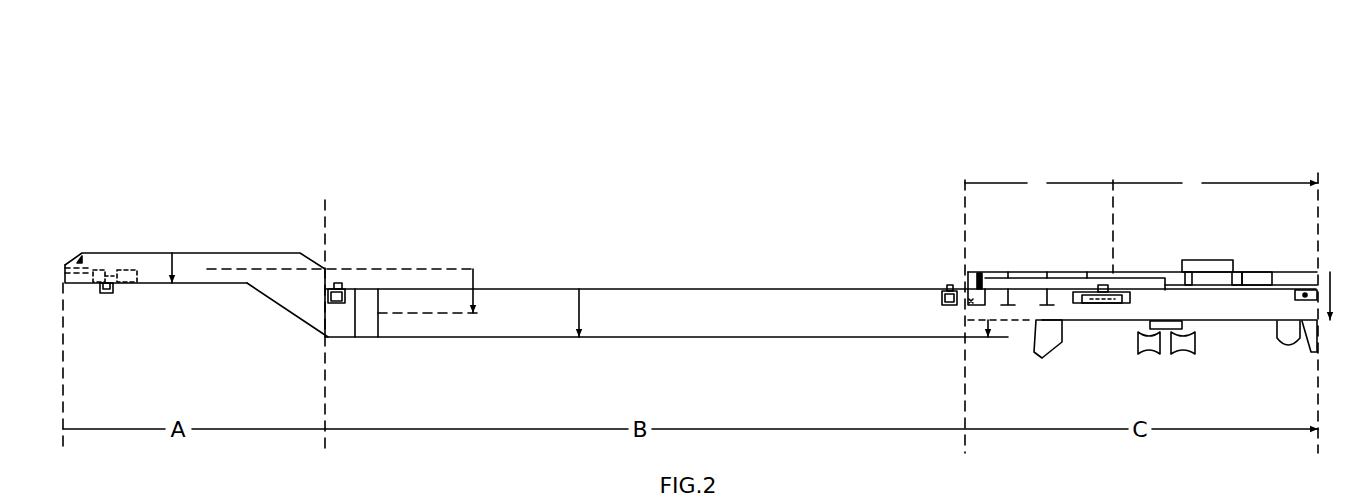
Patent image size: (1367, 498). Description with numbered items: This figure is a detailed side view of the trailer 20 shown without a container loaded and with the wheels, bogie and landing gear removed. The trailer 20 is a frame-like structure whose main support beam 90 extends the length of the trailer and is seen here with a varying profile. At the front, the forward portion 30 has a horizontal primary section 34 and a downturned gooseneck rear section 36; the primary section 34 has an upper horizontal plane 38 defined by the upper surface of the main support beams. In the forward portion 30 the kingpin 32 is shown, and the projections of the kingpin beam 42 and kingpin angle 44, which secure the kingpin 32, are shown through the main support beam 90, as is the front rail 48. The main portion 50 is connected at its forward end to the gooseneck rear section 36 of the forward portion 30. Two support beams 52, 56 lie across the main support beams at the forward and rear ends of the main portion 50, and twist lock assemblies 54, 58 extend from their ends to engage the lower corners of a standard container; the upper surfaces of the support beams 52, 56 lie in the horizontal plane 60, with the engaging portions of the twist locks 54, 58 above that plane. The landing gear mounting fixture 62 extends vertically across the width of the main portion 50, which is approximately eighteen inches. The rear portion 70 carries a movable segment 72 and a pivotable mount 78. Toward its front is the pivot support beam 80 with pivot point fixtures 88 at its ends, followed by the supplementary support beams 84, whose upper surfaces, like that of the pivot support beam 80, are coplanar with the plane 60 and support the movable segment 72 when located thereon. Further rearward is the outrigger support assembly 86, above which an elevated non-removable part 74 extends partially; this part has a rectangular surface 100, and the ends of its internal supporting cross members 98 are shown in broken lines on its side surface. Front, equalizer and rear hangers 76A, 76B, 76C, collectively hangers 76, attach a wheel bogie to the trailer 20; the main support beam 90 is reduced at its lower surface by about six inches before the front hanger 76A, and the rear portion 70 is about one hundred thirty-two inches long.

The trailer 20 is at (731, 92).
The forward portion 30 is at (272, 182).
The kingpin 32 is at (105, 294).
The primary section 34 is at (195, 317).
The gooseneck rear section 36 is at (268, 320).
The upper horizontal plane 38 is at (200, 252).
The kingpin beam 42 is at (133, 285).
The kingpin angle 44 is at (89, 278).
The front rail 48 is at (74, 258).
The main portion 50 is at (640, 168).
The support beam 52 is at (335, 304).
The twist lock assembly 54 is at (340, 283).
The support beam 56 is at (940, 306).
The twist lock assembly 58 is at (948, 285).
The horizontal plane 60 is at (680, 289).
The landing gear mounting fixture 62 is at (367, 323).
The rear portion 70 is at (1157, 132).
The movable segment 72 is at (1061, 272).
The non-removable part 74 is at (1263, 282).
The hangers 76 is at (1122, 162).
The front hanger 76A is at (1042, 345).
The equalizer hanger 76B is at (1170, 348).
The rear hanger 76C is at (1287, 348).
The pivotable mount 78 is at (1145, 290).
The pivot support beam 80 is at (968, 303).
The supplementary support beams 84 is at (1008, 306).
The outrigger support assembly 86 is at (1101, 305).
The pivot point fixture 88 is at (978, 283).
The main support beam 90 is at (680, 323).
The supporting cross members 98 is at (1186, 279).
The rectangular surface 100 is at (1233, 272).